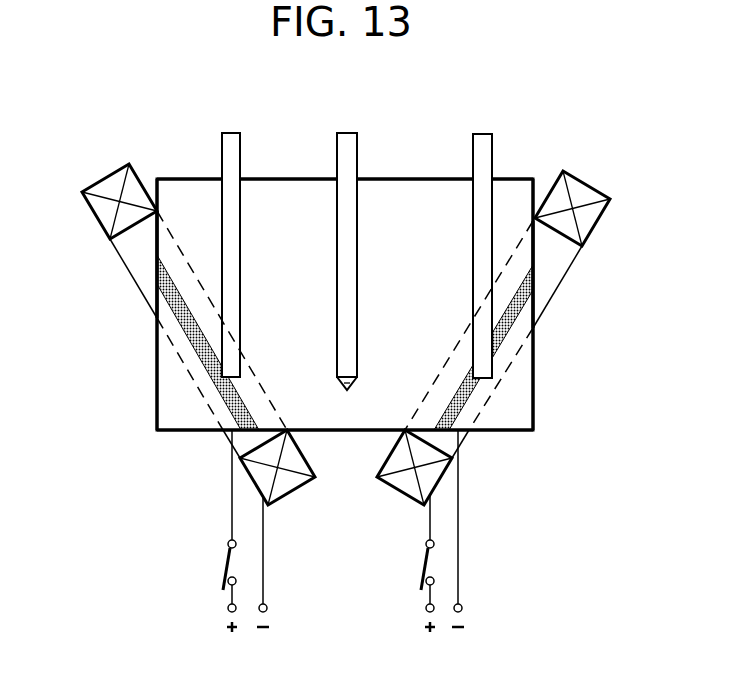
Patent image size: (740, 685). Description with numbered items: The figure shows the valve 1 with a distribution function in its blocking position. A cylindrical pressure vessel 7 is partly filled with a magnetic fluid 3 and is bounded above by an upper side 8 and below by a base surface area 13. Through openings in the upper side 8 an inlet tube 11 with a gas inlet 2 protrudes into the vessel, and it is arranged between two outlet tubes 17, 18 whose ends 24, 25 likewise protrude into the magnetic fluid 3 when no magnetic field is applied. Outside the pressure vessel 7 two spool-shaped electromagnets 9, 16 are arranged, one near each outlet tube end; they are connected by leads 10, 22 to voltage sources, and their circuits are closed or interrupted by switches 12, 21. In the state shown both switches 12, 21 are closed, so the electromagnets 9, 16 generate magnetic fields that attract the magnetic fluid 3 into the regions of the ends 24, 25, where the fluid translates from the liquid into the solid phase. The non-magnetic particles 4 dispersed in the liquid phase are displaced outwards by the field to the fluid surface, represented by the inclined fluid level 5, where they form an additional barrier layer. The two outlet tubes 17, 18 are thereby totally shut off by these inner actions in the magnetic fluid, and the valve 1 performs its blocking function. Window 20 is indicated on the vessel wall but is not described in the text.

The valve 1 is at (157, 166).
The gas inlet 2 is at (347, 392).
The magnetic fluid 3 is at (172, 407).
The non-magnetic particles 4 is at (260, 393).
The inclined fluid level 5 is at (242, 382).
The pressure vessel 7 is at (533, 337).
The upper side 8 is at (280, 176).
The electromagnet 9 is at (588, 217).
The lead 10 is at (458, 498).
The inlet tube 11 is at (351, 160).
The switch 12 is at (424, 563).
The base surface area 13 is at (168, 434).
The electromagnet 16 is at (100, 213).
The outlet tube 17 is at (228, 155).
The outlet tube 18 is at (487, 160).
The window 20 is at (152, 334).
The switch 21 is at (226, 563).
The lead 22 is at (232, 498).
The end of outlet tube 24 is at (224, 382).
The end of outlet tube 25 is at (497, 388).